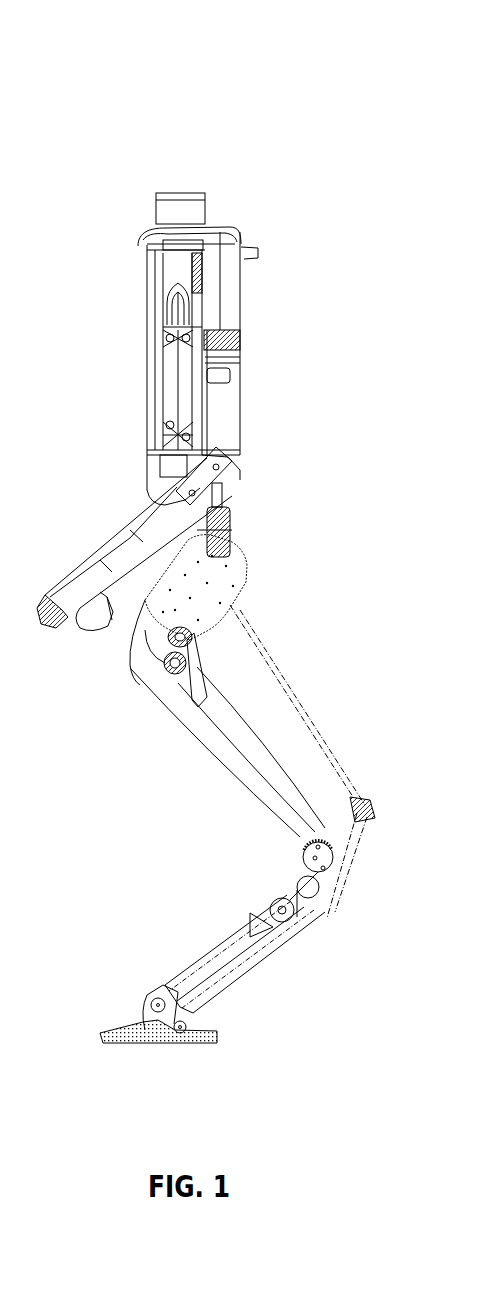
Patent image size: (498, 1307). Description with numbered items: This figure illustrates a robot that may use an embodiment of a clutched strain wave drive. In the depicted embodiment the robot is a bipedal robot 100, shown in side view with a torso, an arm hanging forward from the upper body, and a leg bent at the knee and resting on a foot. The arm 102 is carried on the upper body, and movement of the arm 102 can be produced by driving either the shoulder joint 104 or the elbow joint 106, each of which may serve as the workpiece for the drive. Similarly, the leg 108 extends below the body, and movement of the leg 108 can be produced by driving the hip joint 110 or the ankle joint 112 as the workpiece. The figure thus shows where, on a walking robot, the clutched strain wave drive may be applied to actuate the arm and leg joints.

The bipedal robot 100 is at (206, 78).
The arm 102 is at (225, 400).
The shoulder joint 104 is at (228, 256).
The elbow joint 106 is at (213, 477).
The leg 108 is at (197, 737).
The hip joint 110 is at (222, 568).
The ankle joint 112 is at (313, 867).